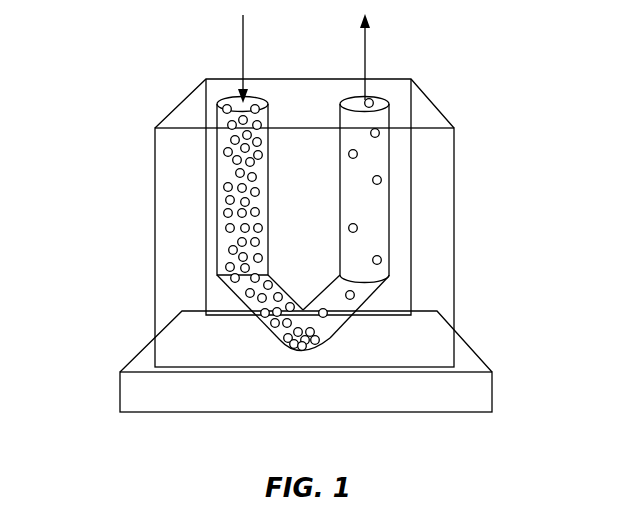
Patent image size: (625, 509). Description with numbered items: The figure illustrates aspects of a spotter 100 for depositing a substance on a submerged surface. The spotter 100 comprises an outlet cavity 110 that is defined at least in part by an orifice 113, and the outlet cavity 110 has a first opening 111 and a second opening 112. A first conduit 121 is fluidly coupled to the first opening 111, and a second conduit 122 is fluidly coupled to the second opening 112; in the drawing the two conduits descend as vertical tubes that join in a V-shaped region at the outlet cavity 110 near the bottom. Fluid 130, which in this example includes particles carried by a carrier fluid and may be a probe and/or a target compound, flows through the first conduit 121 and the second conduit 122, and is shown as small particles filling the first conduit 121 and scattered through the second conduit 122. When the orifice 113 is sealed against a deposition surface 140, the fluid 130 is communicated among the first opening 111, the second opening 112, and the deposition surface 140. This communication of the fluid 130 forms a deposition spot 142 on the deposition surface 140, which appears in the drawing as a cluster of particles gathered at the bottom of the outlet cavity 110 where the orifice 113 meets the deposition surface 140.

The spotter 100 is at (141, 44).
The outlet cavity 110 is at (286, 366).
The first opening 111 is at (275, 332).
The second opening 112 is at (324, 320).
The orifice 113 is at (318, 352).
The first conduit 121 is at (217, 222).
The second conduit 122 is at (390, 225).
The fluid 130 is at (226, 172).
The deposition surface 140 is at (374, 339).
The deposition spot 142 is at (295, 352).